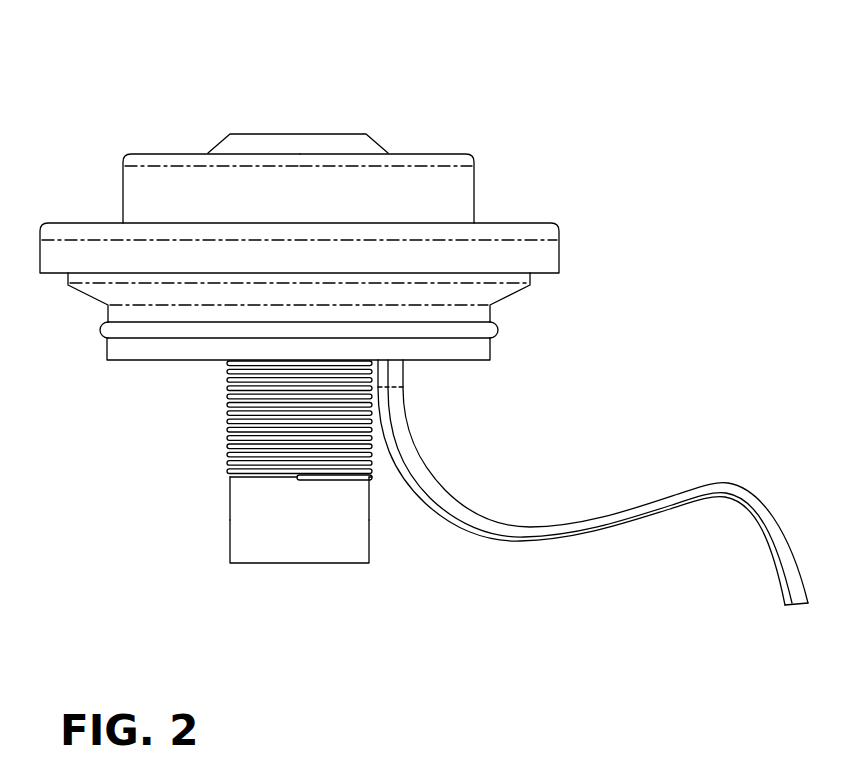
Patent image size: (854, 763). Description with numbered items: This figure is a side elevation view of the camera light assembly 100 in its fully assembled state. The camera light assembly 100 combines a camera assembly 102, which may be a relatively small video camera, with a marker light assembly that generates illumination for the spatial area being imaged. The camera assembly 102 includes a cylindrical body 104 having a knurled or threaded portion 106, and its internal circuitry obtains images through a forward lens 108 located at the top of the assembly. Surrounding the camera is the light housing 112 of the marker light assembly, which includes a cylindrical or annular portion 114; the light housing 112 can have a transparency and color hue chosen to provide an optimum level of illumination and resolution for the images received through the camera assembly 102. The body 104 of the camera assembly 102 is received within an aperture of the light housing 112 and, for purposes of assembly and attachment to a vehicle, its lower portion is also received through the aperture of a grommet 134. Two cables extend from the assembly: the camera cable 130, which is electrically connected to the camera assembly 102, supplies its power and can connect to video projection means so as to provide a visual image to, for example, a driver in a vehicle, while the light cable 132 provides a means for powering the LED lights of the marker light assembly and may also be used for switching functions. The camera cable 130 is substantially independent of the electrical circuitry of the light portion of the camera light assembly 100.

The camera light assembly 100 is at (500, 101).
The camera assembly 102 is at (249, 501).
The cylindrical body 104 is at (273, 552).
The threaded portion 106 is at (230, 410).
The forward lens 108 is at (337, 134).
The light housing 112 is at (136, 192).
The cylindrical portion 114 is at (460, 194).
The camera cable 130 is at (437, 485).
The light cable 132 is at (411, 488).
The grommet 134 is at (478, 315).